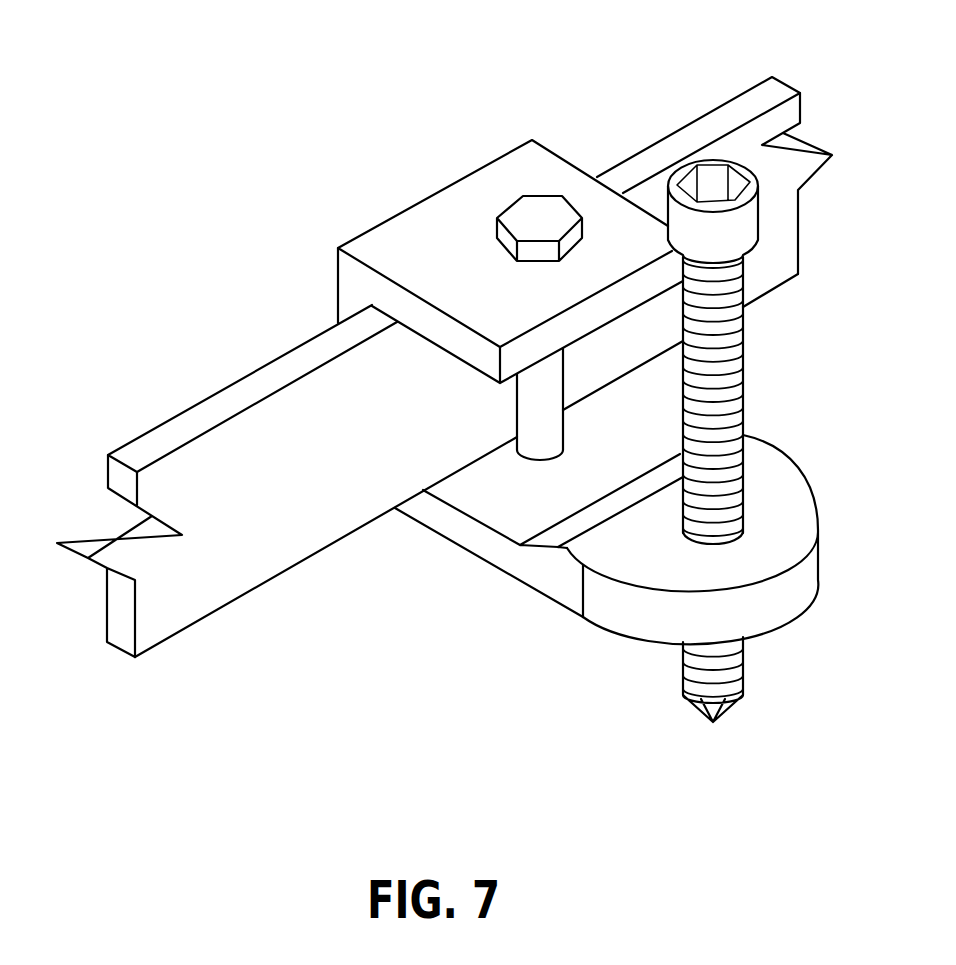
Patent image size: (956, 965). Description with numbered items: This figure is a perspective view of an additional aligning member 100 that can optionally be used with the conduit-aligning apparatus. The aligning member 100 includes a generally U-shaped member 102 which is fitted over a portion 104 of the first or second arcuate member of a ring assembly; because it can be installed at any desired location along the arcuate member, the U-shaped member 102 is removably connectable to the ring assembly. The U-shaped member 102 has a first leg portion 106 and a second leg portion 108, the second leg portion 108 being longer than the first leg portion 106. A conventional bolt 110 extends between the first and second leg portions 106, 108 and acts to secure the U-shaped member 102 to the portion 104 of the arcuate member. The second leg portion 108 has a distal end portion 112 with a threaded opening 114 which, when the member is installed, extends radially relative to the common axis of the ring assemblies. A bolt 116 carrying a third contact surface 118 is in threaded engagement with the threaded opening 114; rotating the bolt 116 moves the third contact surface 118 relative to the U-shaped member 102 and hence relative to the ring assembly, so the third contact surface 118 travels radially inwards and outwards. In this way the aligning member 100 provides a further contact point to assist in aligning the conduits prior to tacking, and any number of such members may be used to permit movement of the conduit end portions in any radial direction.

The aligning member 100 is at (325, 82).
The U-shaped member 102 is at (398, 200).
The portion of the first or second arcuate member 104 is at (252, 390).
The first leg portion 106 is at (493, 177).
The second leg portion 108 is at (552, 578).
The conventional bolt 110 is at (532, 417).
The distal end portion 112 is at (803, 562).
The threaded opening 114 is at (713, 543).
The bolt 116 is at (703, 160).
The third contact surface 118 is at (725, 712).